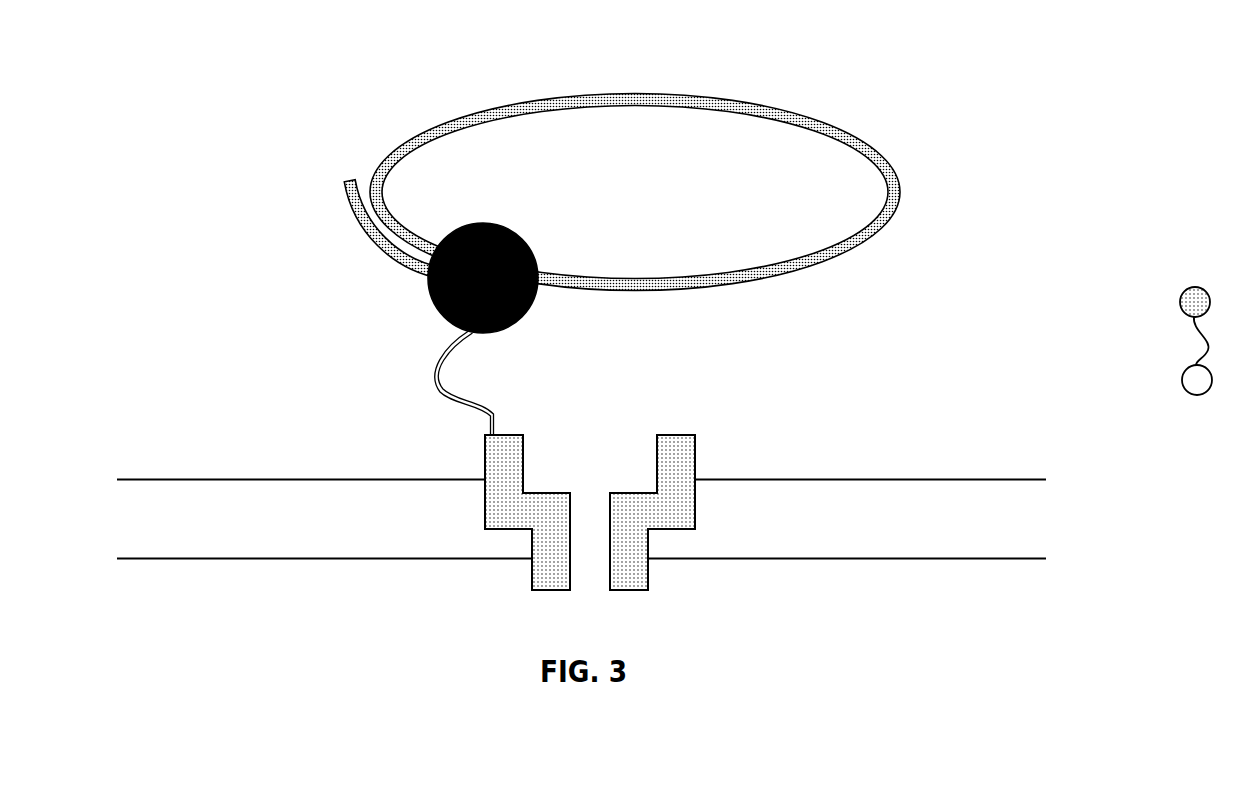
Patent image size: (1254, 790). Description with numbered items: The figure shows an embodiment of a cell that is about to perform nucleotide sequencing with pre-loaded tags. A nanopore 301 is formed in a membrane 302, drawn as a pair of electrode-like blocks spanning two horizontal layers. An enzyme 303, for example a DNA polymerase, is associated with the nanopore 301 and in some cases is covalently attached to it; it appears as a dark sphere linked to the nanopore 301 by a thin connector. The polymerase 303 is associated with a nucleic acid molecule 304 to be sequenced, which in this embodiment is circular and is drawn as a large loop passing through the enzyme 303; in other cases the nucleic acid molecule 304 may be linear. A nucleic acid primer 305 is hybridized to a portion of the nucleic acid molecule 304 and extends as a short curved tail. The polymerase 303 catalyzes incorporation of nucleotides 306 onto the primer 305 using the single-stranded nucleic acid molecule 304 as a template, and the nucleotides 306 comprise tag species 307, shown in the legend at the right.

The nanopore 301 is at (676, 434).
The membrane 302 is at (772, 480).
The enzyme 303 is at (429, 288).
The nucleic acid molecule 304 is at (810, 118).
The nucleic acid primer 305 is at (345, 199).
The nucleotides 306 is at (1200, 287).
The tag species 307 is at (1198, 395).